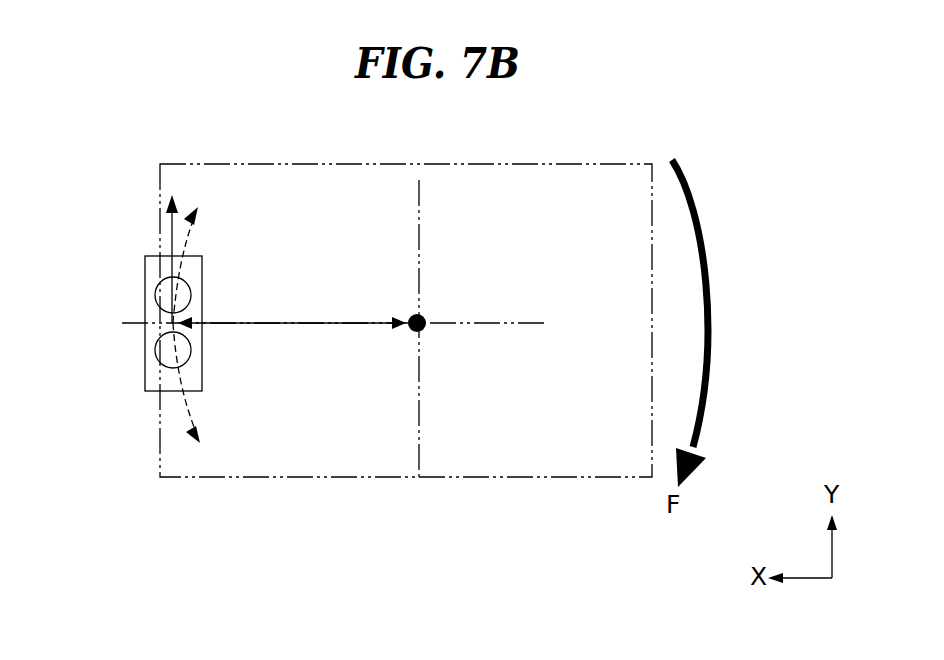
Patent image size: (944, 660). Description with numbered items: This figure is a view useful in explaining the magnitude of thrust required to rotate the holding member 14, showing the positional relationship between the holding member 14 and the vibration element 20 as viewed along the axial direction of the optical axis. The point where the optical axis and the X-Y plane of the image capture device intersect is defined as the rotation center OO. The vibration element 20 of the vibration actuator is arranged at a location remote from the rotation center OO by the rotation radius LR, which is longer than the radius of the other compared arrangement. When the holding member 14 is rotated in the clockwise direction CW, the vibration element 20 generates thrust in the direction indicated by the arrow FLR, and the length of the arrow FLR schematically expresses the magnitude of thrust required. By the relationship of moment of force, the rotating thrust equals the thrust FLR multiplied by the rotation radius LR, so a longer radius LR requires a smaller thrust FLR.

The holding member 14 is at (243, 477).
The vibration element 20 is at (151, 273).
The rotation radius LR is at (300, 323).
The thrust arrow FLR is at (173, 232).
The rotation center OO is at (424, 330).
The clockwise rotation direction CW is at (684, 323).